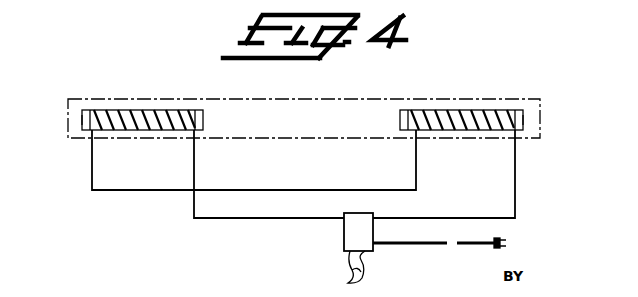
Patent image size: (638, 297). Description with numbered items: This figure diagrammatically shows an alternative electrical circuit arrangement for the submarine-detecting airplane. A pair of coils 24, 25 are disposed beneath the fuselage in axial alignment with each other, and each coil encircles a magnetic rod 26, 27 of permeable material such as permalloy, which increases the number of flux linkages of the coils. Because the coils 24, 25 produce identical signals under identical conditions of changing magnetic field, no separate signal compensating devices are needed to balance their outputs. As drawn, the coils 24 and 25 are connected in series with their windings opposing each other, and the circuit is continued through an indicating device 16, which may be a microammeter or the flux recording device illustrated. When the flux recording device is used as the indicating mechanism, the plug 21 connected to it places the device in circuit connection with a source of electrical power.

The coil 24 is at (116, 109).
The coil 25 is at (471, 109).
The magnetic rod 26 is at (82, 120).
The magnetic rod 27 is at (523, 122).
The indicating device 16 is at (345, 236).
The plug 21 is at (491, 248).